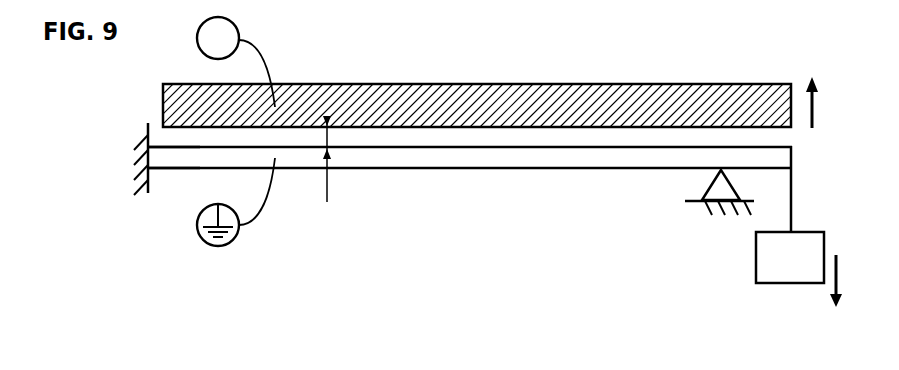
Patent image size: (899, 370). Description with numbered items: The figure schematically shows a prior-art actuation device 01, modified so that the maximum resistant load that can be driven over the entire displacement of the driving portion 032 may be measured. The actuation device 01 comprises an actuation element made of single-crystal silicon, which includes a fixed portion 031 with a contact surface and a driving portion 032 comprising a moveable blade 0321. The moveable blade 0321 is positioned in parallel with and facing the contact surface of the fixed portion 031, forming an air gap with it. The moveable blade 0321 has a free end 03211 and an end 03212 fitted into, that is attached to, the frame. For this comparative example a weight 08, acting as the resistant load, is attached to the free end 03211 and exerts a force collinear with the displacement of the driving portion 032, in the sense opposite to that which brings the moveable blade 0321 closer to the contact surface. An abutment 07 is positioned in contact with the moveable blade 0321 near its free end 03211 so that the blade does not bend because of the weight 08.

The actuation device 01 is at (430, 242).
The fixed portion 031 is at (463, 100).
The driving portion 032 is at (507, 157).
The moveable blade 0321 is at (580, 172).
The free end 03211 is at (793, 158).
The end fitted into the frame 03212 is at (148, 158).
The abutment 07 is at (703, 183).
The weight 08 is at (790, 277).